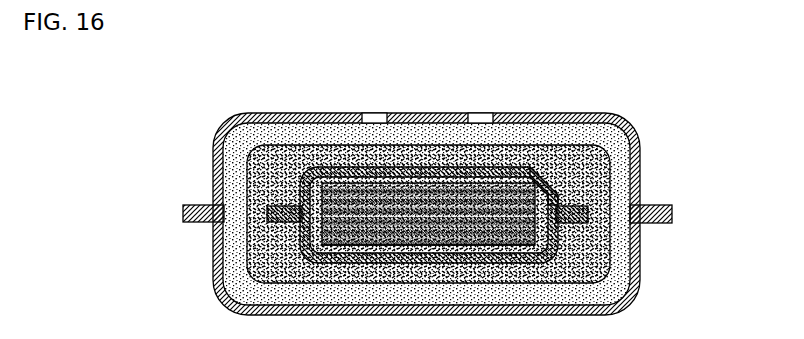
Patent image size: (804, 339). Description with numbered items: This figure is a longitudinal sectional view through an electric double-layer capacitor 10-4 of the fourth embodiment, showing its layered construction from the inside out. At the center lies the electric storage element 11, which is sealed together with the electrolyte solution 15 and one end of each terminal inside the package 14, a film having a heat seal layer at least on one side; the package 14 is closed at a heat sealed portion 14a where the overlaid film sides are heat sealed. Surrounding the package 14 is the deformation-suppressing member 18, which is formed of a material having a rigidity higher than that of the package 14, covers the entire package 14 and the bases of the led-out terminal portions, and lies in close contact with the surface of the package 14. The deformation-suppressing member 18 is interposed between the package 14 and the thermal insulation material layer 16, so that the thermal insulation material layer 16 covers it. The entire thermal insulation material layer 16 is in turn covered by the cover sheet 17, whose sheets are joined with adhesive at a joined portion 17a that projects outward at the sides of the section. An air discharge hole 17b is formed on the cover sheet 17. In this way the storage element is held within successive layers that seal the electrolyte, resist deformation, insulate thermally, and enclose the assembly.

The electric double-layer capacitor 10-4 is at (433, 189).
The electric storage element 11 is at (336, 183).
The package 14 is at (455, 172).
The heat sealed portion 14a is at (576, 205).
The electrolyte solution 15 is at (554, 192).
The thermal insulation material layer 16 is at (430, 136).
The cover sheet 17 is at (530, 118).
The joined portion 17a is at (656, 205).
The air discharge hole 17b is at (374, 117).
The deformation-suppressing member 18 is at (404, 156).